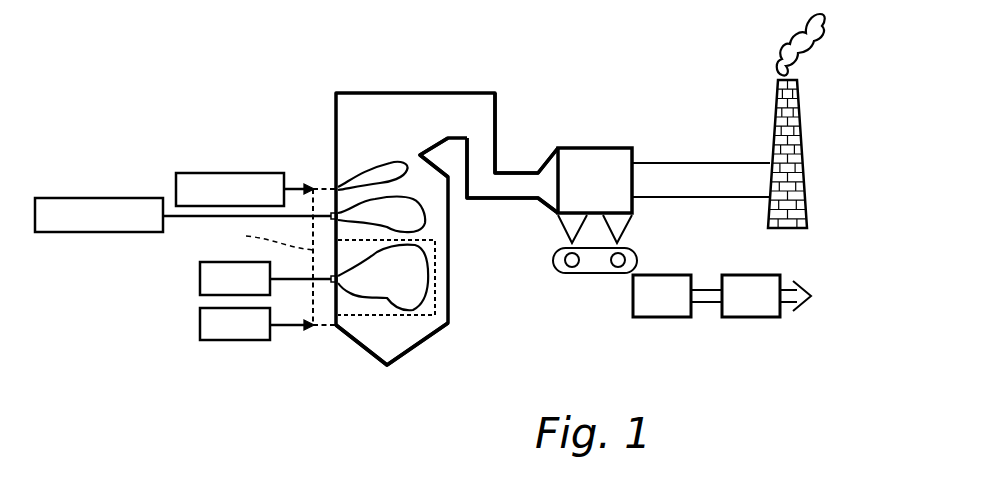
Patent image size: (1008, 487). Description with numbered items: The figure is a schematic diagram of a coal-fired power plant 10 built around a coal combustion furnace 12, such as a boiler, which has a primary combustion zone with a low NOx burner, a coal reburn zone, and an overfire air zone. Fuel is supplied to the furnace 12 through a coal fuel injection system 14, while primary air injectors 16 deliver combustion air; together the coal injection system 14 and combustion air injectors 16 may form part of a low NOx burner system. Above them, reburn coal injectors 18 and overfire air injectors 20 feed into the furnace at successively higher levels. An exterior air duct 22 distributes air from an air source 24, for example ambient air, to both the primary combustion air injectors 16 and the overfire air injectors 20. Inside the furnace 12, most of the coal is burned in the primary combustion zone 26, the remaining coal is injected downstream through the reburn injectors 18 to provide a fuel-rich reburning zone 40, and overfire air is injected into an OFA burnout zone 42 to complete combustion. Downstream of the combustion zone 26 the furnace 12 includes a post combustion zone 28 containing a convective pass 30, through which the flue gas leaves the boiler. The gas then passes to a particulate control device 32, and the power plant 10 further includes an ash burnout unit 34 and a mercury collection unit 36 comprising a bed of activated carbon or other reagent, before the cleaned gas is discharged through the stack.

The coal-fired power plant 10 is at (646, 69).
The coal combustion furnace 12 is at (450, 292).
The coal fuel injection system 14 is at (200, 283).
The primary air injectors 16 is at (307, 329).
The reburn coal injectors 18 is at (80, 233).
The overfire air injectors 20 is at (215, 173).
The exterior air duct 22 is at (265, 238).
The air source 24 is at (230, 341).
The combustion zone 26 is at (448, 324).
The post combustion zone 28 is at (430, 184).
The convective pass 30 is at (480, 150).
The particulate control device 32 is at (580, 160).
The ash burnout unit 34 is at (650, 307).
The mercury collection unit 36 is at (739, 307).
The fuel-rich reburning zone 40 is at (417, 217).
The OFA burnout zone 42 is at (370, 178).